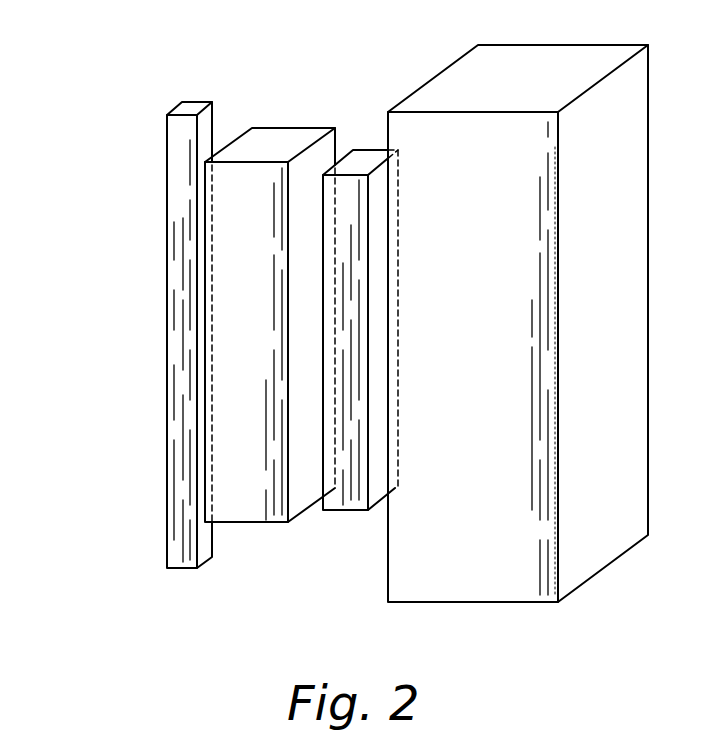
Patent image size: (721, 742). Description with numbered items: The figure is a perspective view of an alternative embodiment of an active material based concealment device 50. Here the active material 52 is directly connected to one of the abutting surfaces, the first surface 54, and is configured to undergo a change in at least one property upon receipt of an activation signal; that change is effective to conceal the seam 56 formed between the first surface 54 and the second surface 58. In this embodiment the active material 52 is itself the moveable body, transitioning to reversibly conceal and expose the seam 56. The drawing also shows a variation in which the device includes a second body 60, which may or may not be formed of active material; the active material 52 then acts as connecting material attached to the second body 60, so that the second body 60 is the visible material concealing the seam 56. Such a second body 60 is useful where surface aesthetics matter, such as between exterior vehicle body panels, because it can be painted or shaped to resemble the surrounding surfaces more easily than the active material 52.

The active material based concealment device 50 is at (117, 92).
The active material 52 is at (268, 137).
The first surface 54 is at (173, 310).
The seam 56 is at (357, 103).
The second surface 58 is at (458, 537).
The second body 60 is at (348, 510).